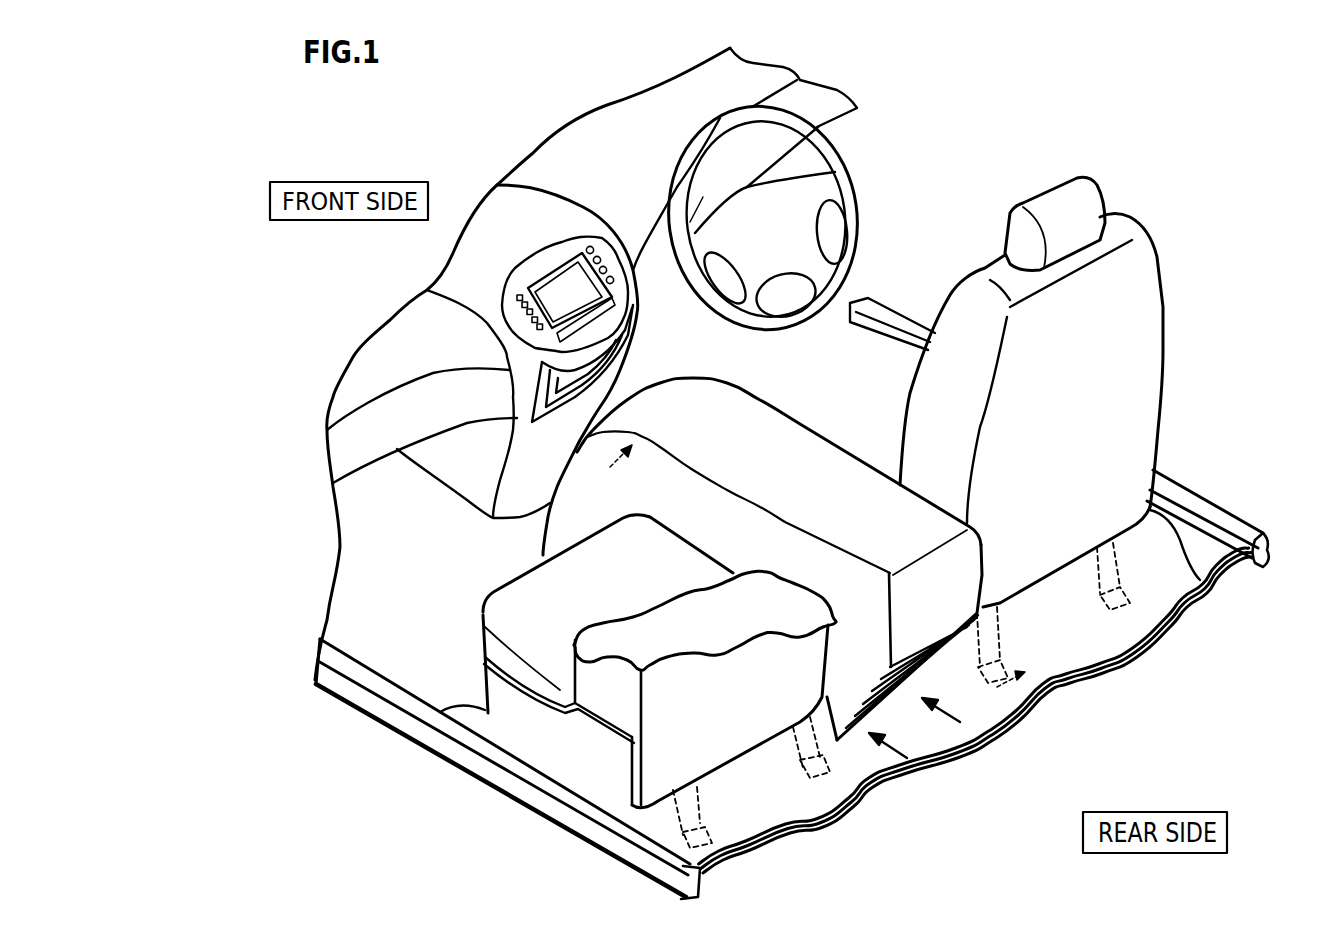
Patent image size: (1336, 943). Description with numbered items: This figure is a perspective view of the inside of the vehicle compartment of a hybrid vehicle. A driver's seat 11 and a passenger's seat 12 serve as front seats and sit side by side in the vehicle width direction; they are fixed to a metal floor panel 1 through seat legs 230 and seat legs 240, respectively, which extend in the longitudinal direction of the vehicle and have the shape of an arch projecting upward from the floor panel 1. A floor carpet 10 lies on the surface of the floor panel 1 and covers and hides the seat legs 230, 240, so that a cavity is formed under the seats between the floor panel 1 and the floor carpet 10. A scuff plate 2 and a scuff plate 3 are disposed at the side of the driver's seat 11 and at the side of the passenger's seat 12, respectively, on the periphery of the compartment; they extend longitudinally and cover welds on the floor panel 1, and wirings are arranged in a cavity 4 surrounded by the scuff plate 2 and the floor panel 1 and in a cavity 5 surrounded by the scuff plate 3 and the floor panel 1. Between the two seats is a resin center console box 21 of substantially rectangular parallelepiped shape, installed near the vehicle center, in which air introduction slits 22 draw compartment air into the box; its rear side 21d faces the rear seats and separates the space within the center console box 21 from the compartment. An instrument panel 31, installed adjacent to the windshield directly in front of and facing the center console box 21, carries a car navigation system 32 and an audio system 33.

The floor panel 1 is at (717, 868).
The scuff plate 2 is at (1205, 510).
The scuff plate 3 is at (515, 765).
The cavity 4 is at (1273, 553).
The cavity 5 is at (700, 897).
The floor carpet 10 is at (775, 798).
The driver's seat 11 is at (1140, 358).
The passenger's seat 12 is at (513, 603).
The center console box 21 is at (823, 483).
The side 21d is at (980, 620).
The air introduction slits 22 is at (923, 620).
The instrument panel 31 is at (550, 220).
The car navigation system 32 is at (558, 278).
The audio system 33 is at (572, 372).
The seat legs 230 is at (1027, 647).
The seat legs 240 is at (702, 818).